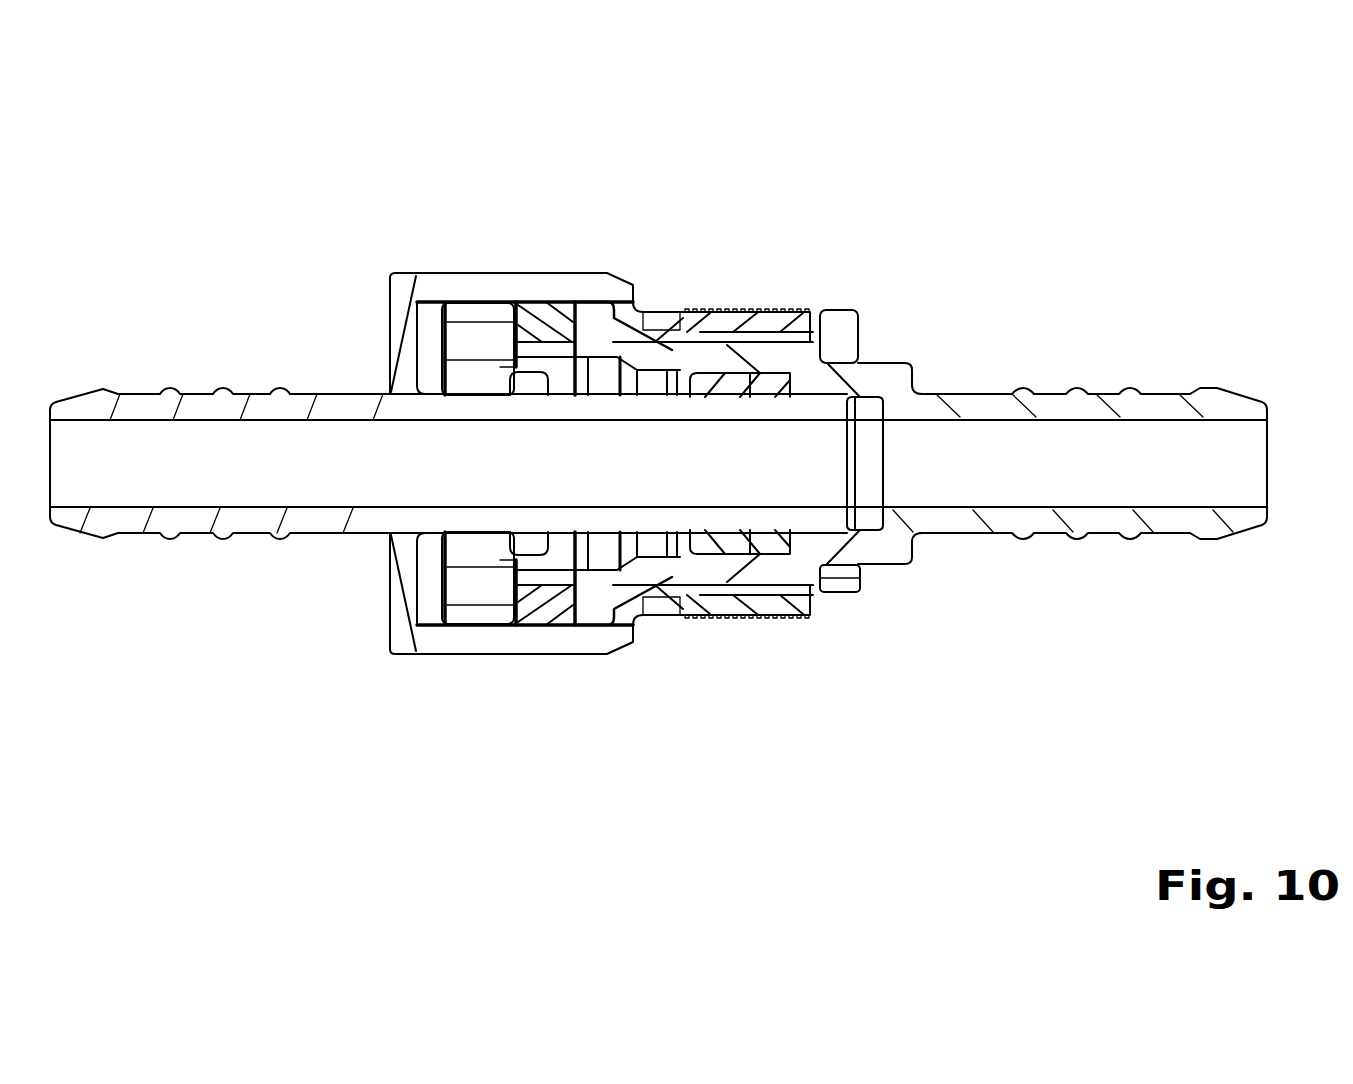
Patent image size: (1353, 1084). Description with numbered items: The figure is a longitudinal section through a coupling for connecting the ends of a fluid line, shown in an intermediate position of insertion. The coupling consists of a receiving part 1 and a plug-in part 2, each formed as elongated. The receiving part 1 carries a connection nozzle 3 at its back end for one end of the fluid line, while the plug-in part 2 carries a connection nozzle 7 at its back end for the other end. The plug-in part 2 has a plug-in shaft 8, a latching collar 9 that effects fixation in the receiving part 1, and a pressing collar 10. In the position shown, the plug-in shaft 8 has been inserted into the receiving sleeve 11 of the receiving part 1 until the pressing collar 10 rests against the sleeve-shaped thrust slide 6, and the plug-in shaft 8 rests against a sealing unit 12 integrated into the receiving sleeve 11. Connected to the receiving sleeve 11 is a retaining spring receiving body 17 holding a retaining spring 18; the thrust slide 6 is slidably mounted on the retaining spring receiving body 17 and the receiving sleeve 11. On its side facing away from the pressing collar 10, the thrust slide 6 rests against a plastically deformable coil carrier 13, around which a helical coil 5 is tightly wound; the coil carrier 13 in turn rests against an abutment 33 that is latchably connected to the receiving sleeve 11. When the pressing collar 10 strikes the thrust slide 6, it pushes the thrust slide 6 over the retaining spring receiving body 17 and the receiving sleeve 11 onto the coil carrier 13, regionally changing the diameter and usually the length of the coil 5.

The receiving part 1 is at (1018, 262).
The plug-in part 2 is at (297, 278).
The connection nozzle 3 is at (1045, 523).
The coil 5 is at (781, 320).
The thrust slide 6 is at (585, 290).
The connection nozzle 7 is at (240, 520).
The plug-in shaft 8 is at (655, 405).
The latching collar 9 is at (534, 386).
The pressing collar 10 is at (403, 282).
The receiving sleeve 11 is at (610, 340).
The sealing unit 12 is at (702, 368).
The coil carrier 13 is at (733, 333).
The retaining spring receiving body 17 is at (537, 300).
The retaining spring 18 is at (477, 300).
The abutment 33 is at (840, 337).